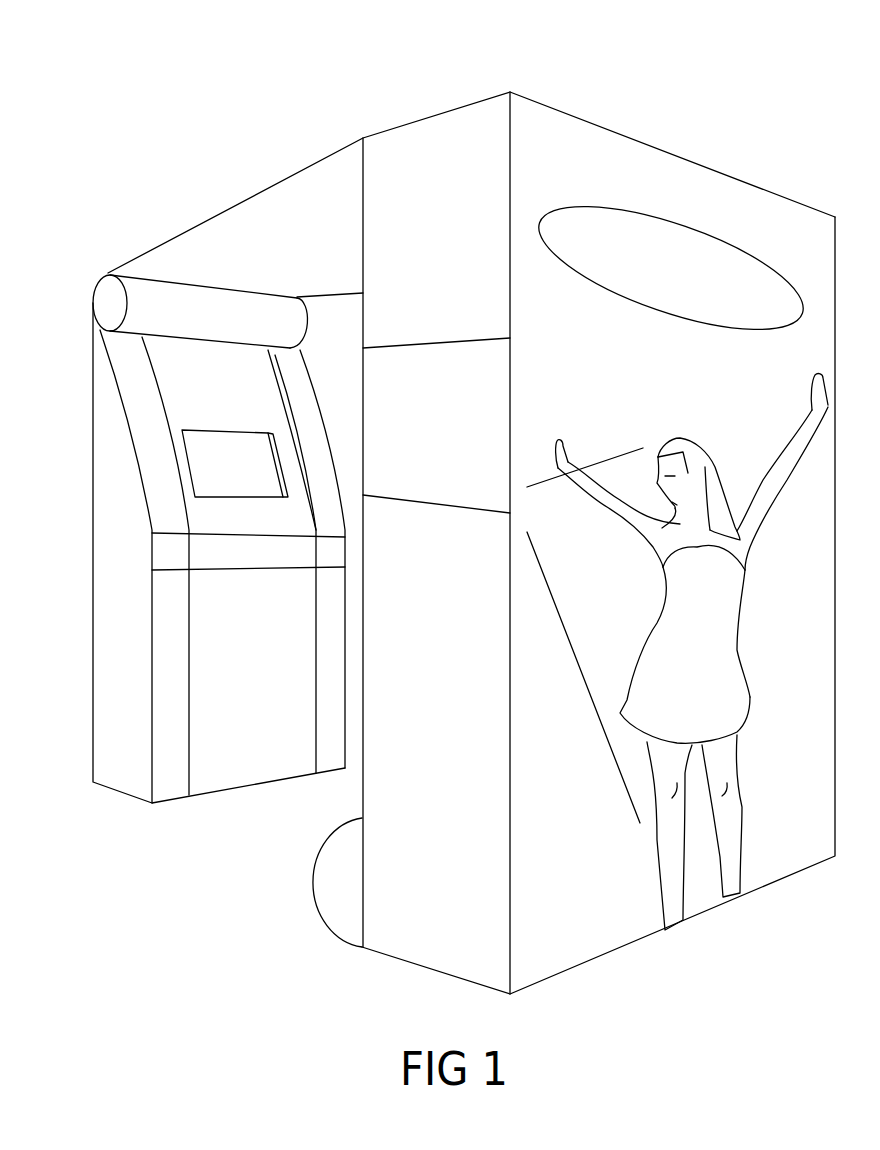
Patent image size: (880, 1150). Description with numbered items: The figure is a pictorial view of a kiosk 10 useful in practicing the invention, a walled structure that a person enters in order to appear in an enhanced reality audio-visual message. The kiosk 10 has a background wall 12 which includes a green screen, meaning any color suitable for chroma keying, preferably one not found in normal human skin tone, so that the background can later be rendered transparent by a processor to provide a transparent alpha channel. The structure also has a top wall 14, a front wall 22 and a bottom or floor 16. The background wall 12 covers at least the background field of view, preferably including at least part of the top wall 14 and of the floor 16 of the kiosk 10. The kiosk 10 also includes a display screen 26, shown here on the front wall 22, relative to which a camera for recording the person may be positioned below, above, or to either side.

The kiosk 10 is at (703, 93).
The background wall 12 is at (258, 212).
The top wall 14 is at (282, 180).
The bottom or floor 16 is at (323, 927).
The front wall 22 is at (155, 420).
The display screen 26 is at (217, 463).